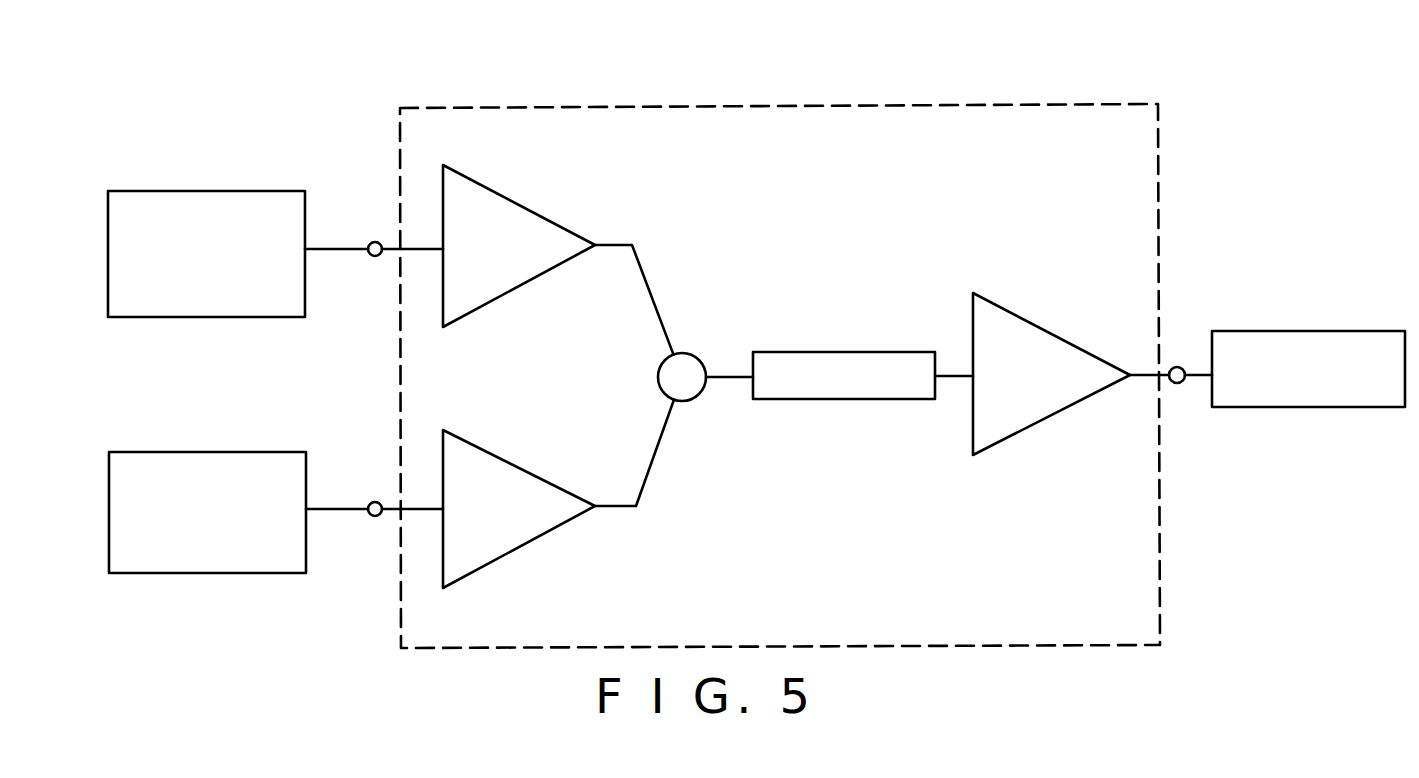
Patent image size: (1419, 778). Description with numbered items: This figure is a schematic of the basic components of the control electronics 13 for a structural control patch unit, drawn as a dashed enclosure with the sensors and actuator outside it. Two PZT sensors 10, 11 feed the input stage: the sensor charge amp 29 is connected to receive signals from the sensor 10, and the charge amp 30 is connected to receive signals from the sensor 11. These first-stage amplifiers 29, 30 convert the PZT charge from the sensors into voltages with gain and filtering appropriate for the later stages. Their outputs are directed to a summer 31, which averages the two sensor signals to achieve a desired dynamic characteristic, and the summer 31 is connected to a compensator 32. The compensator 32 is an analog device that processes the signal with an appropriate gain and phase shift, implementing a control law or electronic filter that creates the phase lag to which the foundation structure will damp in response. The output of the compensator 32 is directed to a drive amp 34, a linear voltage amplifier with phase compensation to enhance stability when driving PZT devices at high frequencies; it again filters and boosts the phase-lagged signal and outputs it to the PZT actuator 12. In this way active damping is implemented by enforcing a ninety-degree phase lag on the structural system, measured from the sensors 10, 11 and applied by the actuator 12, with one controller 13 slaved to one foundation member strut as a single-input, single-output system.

The sensor 10 is at (270, 452).
The sensor 11 is at (305, 284).
The PZT actuator 12 is at (1300, 331).
The control electronics 13 is at (977, 102).
The sensor charge amp 29 is at (518, 465).
The sensor charge amp 30 is at (542, 275).
The summer 31 is at (693, 354).
The compensator 32 is at (835, 352).
The drive amp 34 is at (1030, 318).